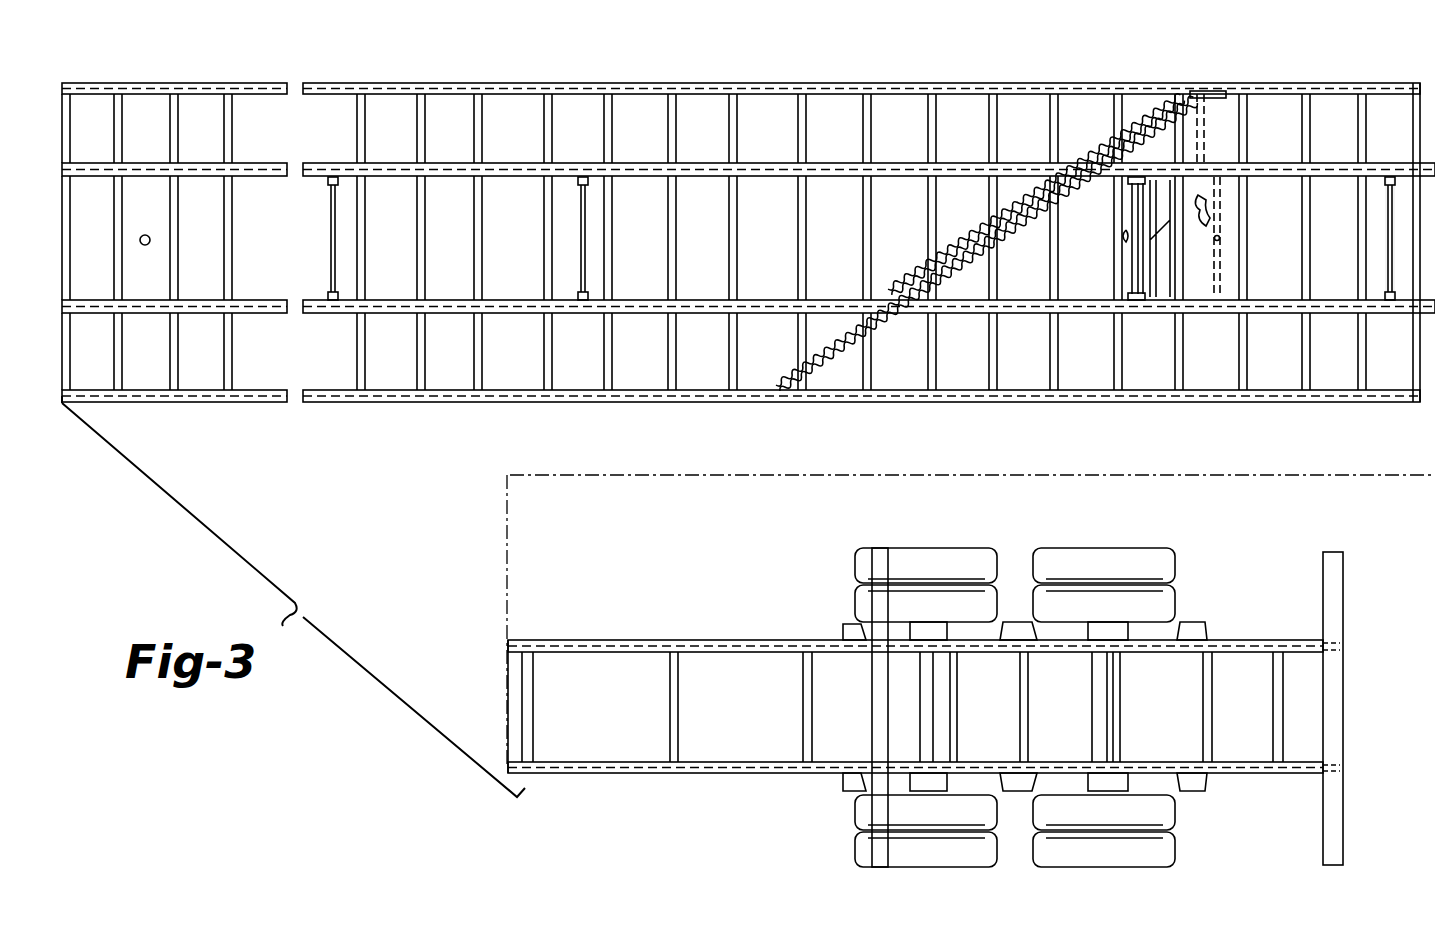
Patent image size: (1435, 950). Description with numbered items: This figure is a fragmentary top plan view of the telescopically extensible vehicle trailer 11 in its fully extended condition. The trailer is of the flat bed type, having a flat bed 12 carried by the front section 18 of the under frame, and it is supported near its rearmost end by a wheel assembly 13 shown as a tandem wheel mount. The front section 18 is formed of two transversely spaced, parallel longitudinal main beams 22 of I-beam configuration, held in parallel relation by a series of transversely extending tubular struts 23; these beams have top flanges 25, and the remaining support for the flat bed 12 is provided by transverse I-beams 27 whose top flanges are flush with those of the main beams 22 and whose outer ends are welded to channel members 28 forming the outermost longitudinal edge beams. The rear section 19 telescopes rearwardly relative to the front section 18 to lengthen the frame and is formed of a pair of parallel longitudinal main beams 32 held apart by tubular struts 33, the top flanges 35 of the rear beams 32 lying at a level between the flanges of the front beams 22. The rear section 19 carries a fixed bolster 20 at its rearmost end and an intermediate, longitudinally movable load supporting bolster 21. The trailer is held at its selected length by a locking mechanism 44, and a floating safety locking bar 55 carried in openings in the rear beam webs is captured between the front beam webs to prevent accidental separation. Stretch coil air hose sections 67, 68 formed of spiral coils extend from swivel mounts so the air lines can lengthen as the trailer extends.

The telescopically extensible vehicle trailer 11 is at (797, 69).
The flat bed 12 is at (575, 83).
The front section 18 is at (466, 404).
The longitudinal main beams 22 is at (440, 162).
The top flanges 25 is at (758, 163).
The transverse I-beams 27 is at (537, 102).
The channel members 28 is at (700, 83).
The tubular struts 23 is at (330, 232).
The rear section main beams 32 is at (1328, 298).
The locking mechanism 44 is at (1232, 239).
The floating safety locking bar 55 is at (1172, 285).
The stretch coil air hose section 67 is at (917, 278).
The stretch coil air hose section 68 is at (905, 340).
The rear section 19 is at (710, 629).
The top flanges 35 is at (570, 640).
The tubular struts 33 is at (1028, 727).
The wheel assembly 13 is at (1192, 557).
The intermediate load supporting bolster 21 is at (858, 568).
The fixed bolster 20 is at (1343, 840).